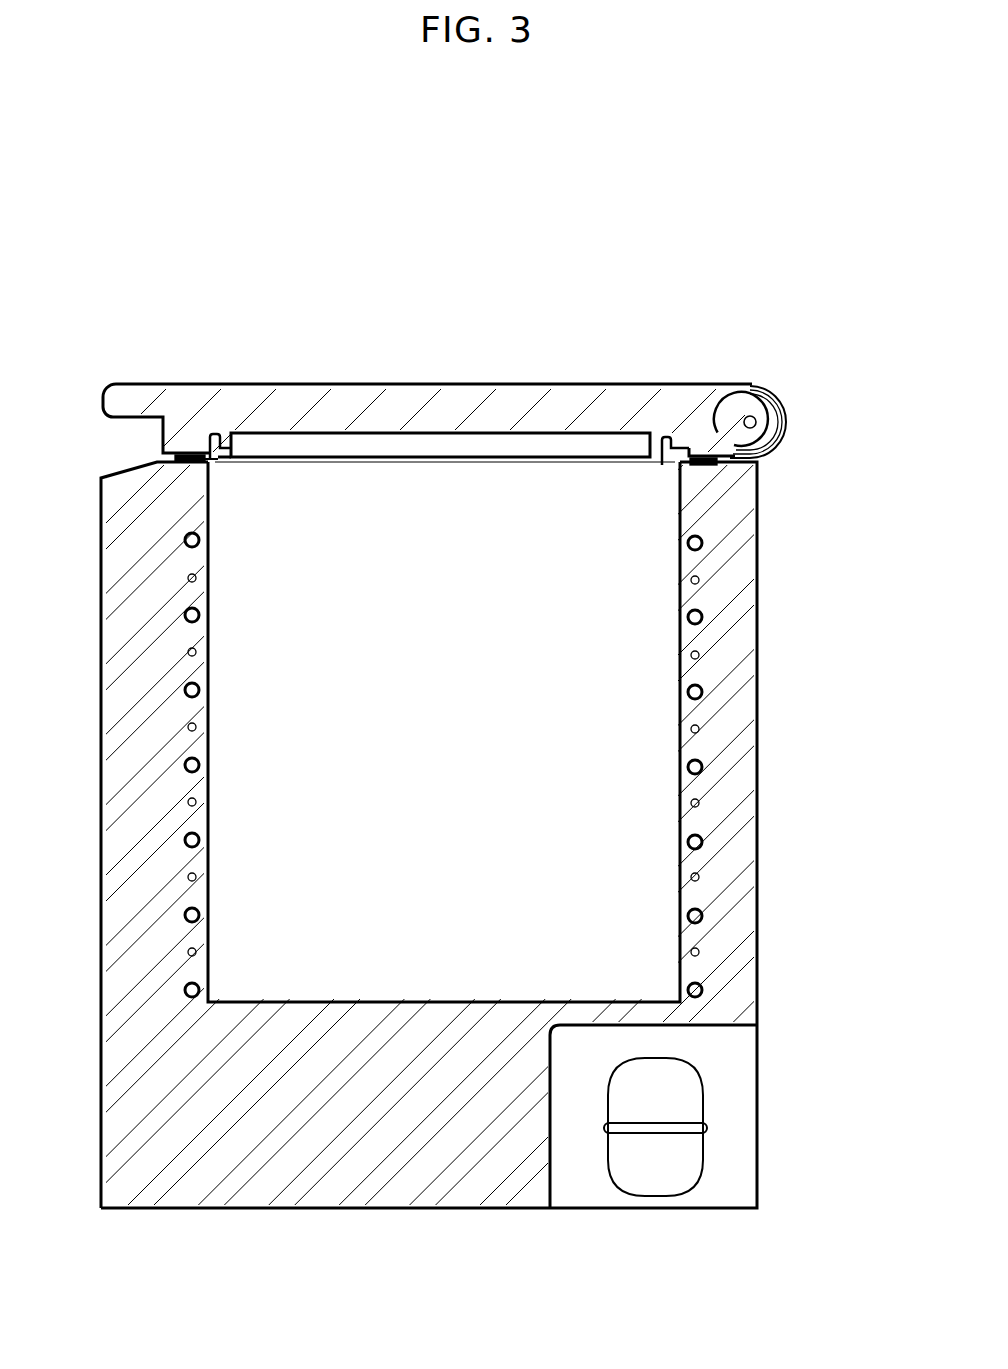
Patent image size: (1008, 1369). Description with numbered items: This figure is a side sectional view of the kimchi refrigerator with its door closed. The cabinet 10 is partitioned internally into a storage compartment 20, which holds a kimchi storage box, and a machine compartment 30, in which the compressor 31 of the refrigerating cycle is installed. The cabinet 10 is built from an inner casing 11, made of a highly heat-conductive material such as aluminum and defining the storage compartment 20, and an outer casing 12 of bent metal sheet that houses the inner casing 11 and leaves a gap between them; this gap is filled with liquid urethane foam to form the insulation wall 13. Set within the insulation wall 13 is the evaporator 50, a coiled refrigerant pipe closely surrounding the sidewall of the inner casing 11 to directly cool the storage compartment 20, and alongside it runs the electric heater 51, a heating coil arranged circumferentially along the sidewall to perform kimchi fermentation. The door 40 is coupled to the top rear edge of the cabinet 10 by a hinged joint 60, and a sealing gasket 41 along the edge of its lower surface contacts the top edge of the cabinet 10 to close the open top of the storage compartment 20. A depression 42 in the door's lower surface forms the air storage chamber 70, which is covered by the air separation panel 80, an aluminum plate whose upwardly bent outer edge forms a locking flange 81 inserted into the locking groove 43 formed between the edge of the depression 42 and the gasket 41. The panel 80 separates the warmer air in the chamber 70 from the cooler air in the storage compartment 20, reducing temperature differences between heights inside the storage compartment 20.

The cabinet 10 is at (504, 684).
The inner casing 11 is at (680, 791).
The outer casing 12 is at (758, 690).
The insulation wall 13 is at (722, 897).
The storage compartment 20 is at (464, 737).
The machine compartment 30 is at (745, 1083).
The compressor 31 is at (657, 1197).
The door 40 is at (504, 684).
The sealing gasket 41 is at (178, 458).
The depression 42 is at (524, 434).
The locking groove 43 is at (213, 435).
The evaporator 50 is at (704, 543).
The electric heater 51 is at (700, 580).
The hinged joint 60 is at (756, 422).
The air storage chamber 70 is at (393, 448).
The air separation panel 80 is at (368, 482).
The locking flange 81 is at (215, 465).